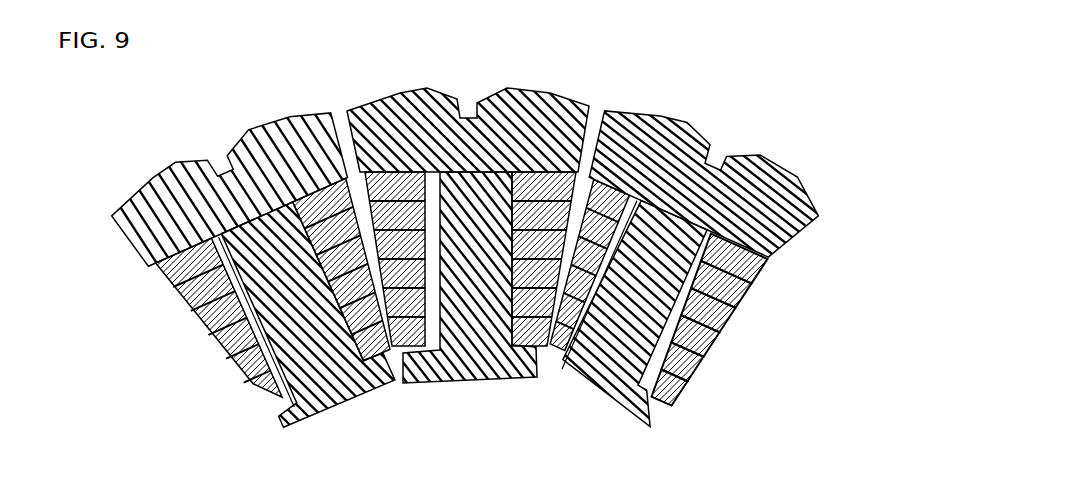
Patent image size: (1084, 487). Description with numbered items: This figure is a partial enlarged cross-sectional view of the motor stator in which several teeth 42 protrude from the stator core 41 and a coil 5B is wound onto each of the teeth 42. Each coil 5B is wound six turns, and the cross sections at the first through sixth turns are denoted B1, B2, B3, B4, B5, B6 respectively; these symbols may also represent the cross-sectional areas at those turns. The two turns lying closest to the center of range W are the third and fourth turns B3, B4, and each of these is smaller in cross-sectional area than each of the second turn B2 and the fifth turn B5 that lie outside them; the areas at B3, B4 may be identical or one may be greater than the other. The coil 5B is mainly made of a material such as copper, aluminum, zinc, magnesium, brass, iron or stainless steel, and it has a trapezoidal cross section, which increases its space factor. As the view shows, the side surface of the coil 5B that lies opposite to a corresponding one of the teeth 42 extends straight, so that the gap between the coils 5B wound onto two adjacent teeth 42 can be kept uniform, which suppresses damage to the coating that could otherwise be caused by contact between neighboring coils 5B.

The stator core 41 is at (790, 207).
The teeth 42 is at (603, 392).
The first turn B1 is at (705, 398).
The second turn B2 is at (710, 352).
The third turn B3 is at (723, 337).
The fourth turn B4 is at (733, 320).
The fifth turn B5 is at (757, 303).
The sixth turn B6 is at (774, 277).
The coil 5B is at (710, 338).
The range W is at (438, 174).